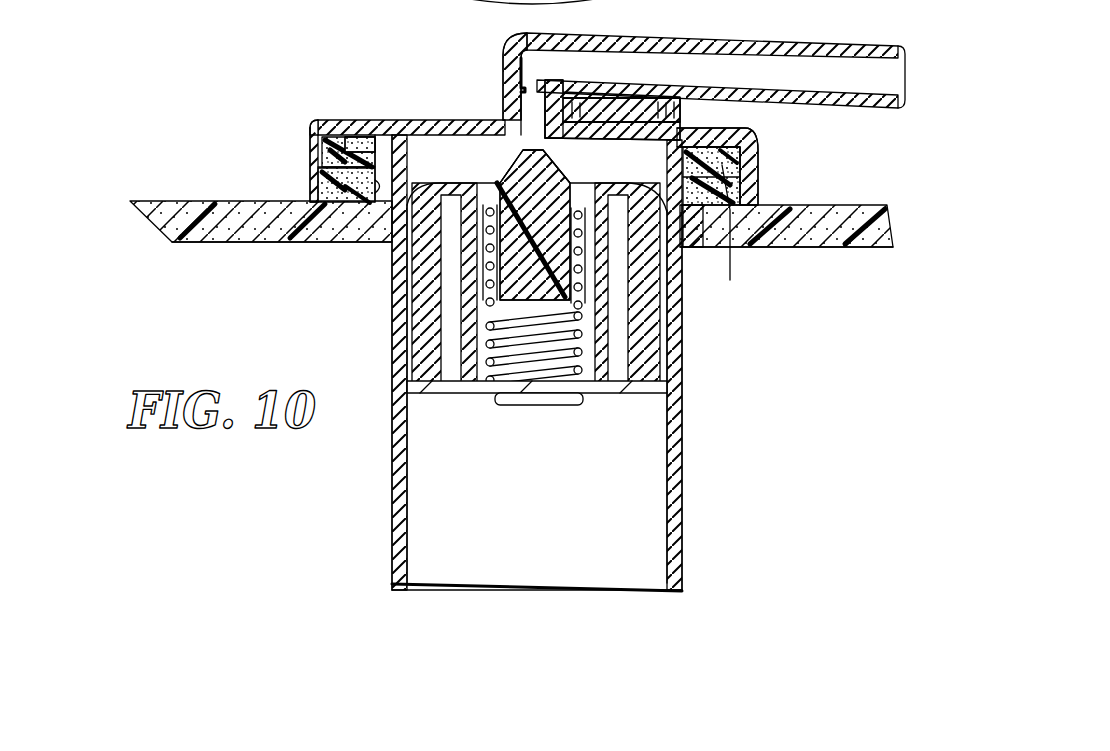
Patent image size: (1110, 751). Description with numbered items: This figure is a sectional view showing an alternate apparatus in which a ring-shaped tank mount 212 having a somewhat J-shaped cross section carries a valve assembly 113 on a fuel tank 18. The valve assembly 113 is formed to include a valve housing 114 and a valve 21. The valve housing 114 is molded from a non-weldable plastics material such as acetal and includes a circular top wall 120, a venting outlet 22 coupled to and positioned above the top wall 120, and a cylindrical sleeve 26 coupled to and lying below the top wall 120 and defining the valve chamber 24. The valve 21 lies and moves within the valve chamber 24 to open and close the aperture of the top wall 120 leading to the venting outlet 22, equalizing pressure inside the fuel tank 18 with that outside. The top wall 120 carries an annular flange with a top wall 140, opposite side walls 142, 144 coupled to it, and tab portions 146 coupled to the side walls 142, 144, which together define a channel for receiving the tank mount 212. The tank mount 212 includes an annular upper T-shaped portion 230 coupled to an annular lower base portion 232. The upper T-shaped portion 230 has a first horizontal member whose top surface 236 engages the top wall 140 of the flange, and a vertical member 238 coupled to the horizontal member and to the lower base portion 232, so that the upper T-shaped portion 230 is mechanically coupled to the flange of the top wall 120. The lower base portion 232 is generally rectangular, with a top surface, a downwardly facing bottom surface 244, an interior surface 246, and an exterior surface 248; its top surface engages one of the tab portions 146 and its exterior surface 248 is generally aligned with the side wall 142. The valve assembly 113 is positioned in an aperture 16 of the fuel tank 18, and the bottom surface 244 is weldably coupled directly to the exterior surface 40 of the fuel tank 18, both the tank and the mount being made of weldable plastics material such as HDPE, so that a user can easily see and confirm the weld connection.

The aperture 16 is at (384, 240).
The fuel tank 18 is at (886, 248).
The valve 21 is at (441, 403).
The venting outlet 22 is at (793, 32).
The valve chamber 24 is at (542, 549).
The cylindrical sleeve 26 is at (390, 487).
The exterior surface 40 is at (848, 214).
The valve assembly 113 is at (714, 484).
The valve housing 114 is at (684, 528).
The top wall 120 is at (457, 113).
The top wall 140 is at (720, 121).
The side wall 142 is at (767, 224).
The side wall 144 is at (668, 170).
The tab portion 146 is at (693, 180).
The tank mount 212 is at (273, 182).
The upper T-shaped portion 230 is at (345, 137).
The lower base portion 232 is at (338, 213).
The top surface 236 is at (355, 137).
The vertical member 238 is at (343, 163).
The bottom surface 244 is at (733, 177).
The interior surface 246 is at (343, 212).
The exterior surface 248 is at (335, 182).